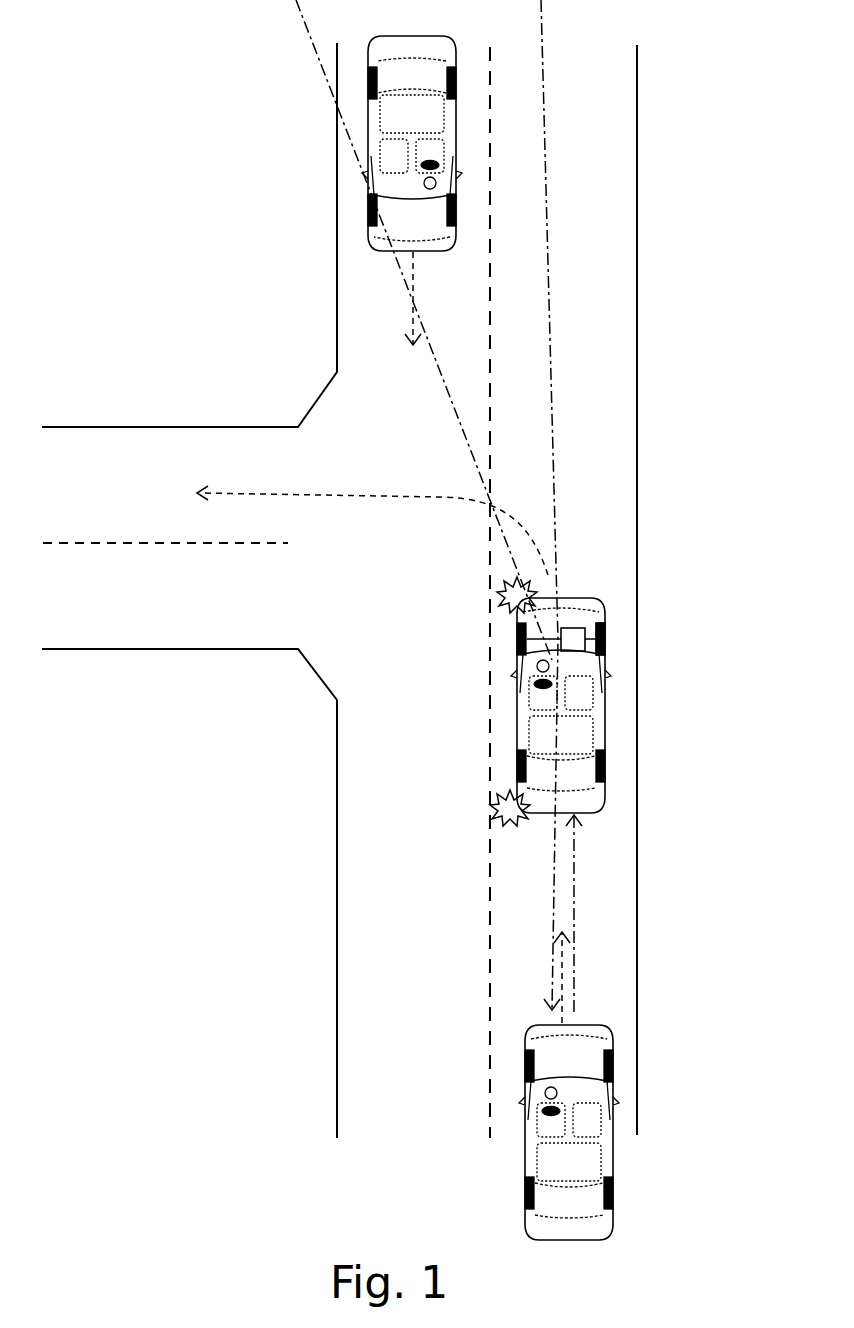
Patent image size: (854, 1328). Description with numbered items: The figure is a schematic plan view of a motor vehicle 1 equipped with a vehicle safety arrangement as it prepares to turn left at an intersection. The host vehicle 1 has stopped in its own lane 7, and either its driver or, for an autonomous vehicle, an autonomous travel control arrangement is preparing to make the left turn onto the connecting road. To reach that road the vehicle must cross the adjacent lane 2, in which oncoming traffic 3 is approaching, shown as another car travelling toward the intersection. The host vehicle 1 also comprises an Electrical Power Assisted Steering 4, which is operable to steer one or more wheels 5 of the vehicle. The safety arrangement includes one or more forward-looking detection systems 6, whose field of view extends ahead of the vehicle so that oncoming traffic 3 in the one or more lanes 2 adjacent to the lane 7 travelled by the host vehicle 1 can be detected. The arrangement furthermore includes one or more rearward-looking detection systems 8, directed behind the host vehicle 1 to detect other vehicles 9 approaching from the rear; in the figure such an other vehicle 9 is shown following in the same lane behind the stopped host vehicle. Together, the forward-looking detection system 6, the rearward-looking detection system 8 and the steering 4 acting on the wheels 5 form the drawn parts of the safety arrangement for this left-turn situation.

The motor vehicle 1 is at (602, 700).
The adjacent lane 2 is at (406, 804).
The oncoming traffic 3 is at (406, 229).
The Electrical Power Assisted Steering 4 is at (576, 628).
The wheels 5 is at (600, 629).
The forward-looking detection system 6 is at (555, 435).
The lane 7 is at (577, 288).
The rearward-looking detection system 8 is at (574, 915).
The other vehicle 9 is at (558, 1054).